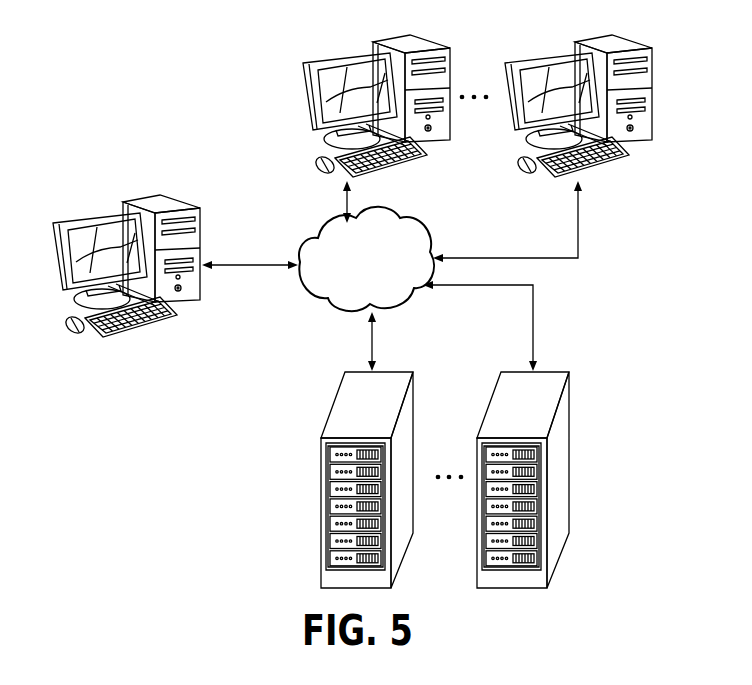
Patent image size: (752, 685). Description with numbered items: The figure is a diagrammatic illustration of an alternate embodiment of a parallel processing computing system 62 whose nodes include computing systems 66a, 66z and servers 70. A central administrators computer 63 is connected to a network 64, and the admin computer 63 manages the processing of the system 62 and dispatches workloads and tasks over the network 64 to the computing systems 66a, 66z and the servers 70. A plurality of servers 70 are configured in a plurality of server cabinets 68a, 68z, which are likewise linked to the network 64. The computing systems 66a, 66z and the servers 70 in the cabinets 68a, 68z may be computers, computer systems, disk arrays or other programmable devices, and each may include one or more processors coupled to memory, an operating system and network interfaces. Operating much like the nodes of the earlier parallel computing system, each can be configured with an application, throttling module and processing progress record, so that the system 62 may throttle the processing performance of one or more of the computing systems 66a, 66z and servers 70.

The parallel processing computing system 62 is at (132, 52).
The central administrators computer 63 is at (81, 221).
The network 64 is at (317, 240).
The computing system 66a is at (332, 62).
The computing system 66z is at (528, 62).
The server cabinet 68a is at (328, 418).
The server cabinet 68z is at (570, 418).
The server 70 is at (325, 558).